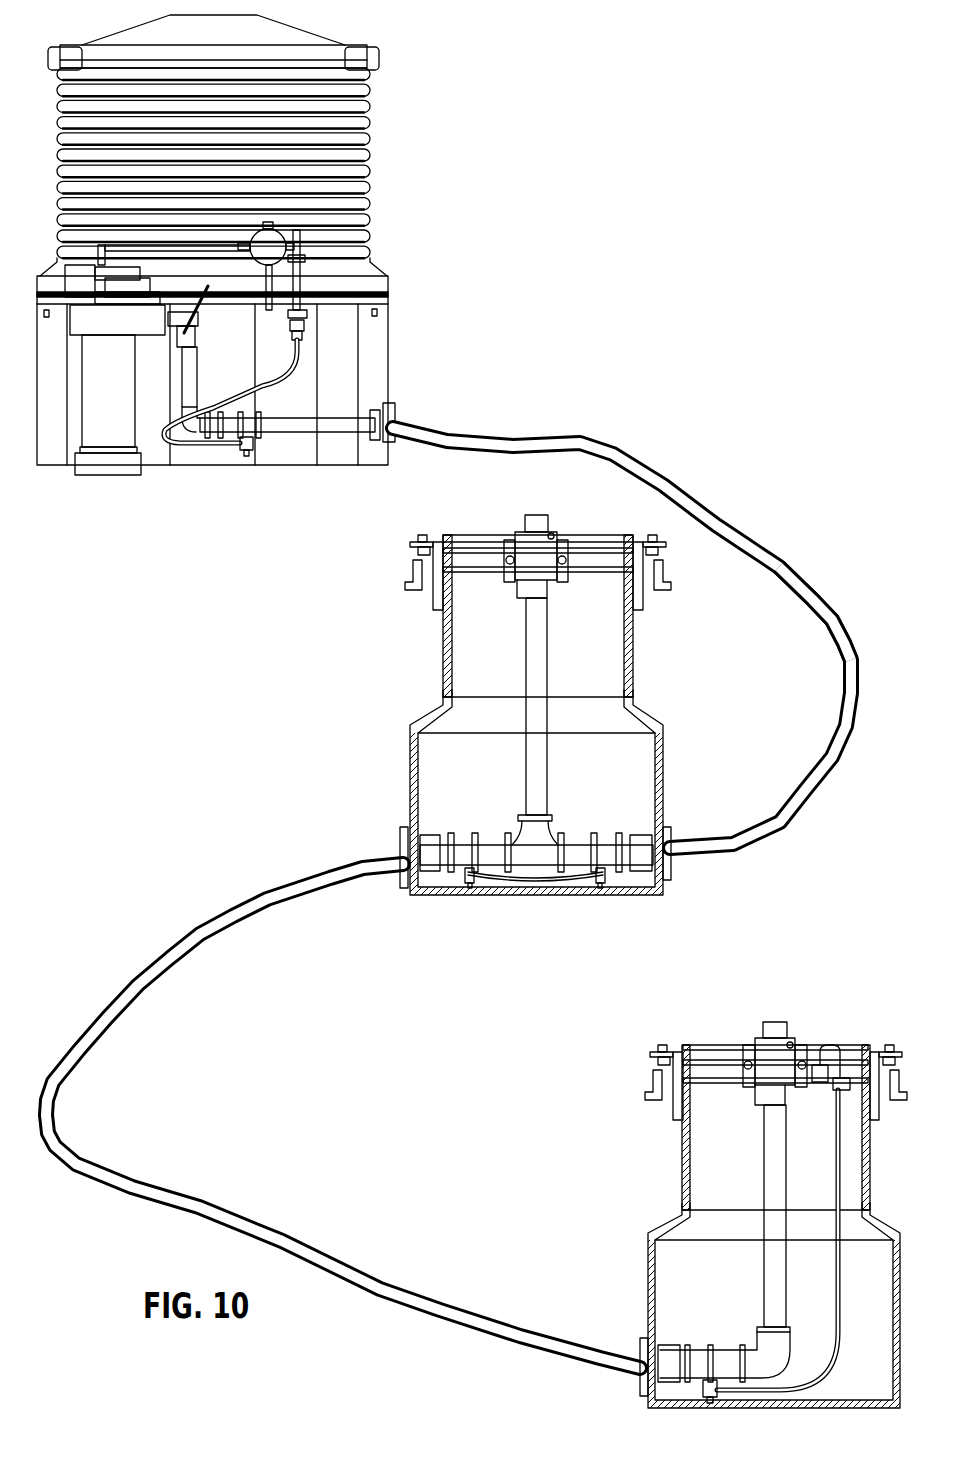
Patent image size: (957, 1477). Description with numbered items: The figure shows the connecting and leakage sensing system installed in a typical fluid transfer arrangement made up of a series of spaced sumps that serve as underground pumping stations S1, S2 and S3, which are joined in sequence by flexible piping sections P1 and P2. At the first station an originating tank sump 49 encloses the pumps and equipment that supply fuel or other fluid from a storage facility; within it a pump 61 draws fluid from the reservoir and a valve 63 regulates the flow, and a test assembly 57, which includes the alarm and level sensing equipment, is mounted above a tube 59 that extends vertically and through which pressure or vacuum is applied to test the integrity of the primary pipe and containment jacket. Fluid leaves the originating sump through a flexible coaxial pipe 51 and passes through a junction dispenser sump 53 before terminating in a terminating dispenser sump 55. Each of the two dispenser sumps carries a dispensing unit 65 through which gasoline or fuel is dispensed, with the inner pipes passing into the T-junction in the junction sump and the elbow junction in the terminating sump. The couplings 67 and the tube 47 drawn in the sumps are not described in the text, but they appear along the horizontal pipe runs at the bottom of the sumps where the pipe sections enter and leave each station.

The flexible tube 47 is at (535, 904).
The originating tank sump 49 is at (258, 355).
The flexible coaxial pipe 51 is at (622, 638).
The junction dispenser sump 53 is at (500, 792).
The terminating dispenser sump 55 is at (726, 1305).
The test assembly 57 is at (344, 281).
The tube 59 is at (281, 431).
The pump 61 is at (110, 410).
The valve 63 is at (205, 321).
The dispensing unit 65 is at (677, 791).
The coupling 67 is at (438, 861).
The underground pumping station S1 is at (231, 145).
The underground pumping station S2 is at (554, 675).
The underground pumping station S3 is at (745, 1224).
The piping section P1 is at (815, 579).
The piping section P2 is at (343, 1116).